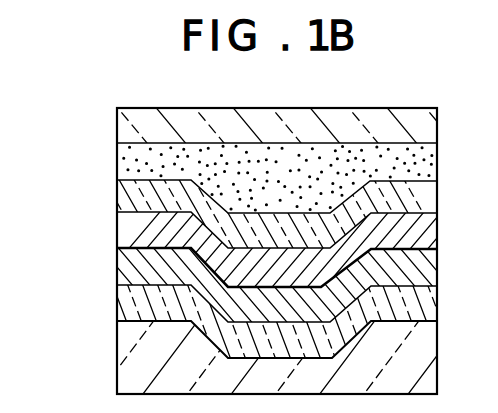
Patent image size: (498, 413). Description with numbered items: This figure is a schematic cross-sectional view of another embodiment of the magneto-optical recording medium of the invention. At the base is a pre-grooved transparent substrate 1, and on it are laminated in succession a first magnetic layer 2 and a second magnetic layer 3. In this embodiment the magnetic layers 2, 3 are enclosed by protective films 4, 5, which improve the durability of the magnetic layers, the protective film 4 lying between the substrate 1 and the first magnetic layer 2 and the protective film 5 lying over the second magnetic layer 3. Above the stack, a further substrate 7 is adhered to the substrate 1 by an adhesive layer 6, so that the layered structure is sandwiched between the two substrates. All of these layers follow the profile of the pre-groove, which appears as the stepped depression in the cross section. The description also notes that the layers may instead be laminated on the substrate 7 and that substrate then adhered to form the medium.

The pre-grooved transparent substrate 1 is at (130, 347).
The first magnetic layer 2 is at (130, 278).
The second magnetic layer 3 is at (130, 238).
The protective film 4 is at (130, 303).
The protective film 5 is at (128, 199).
The adhesive layer 6 is at (123, 166).
The substrate 7 is at (122, 131).